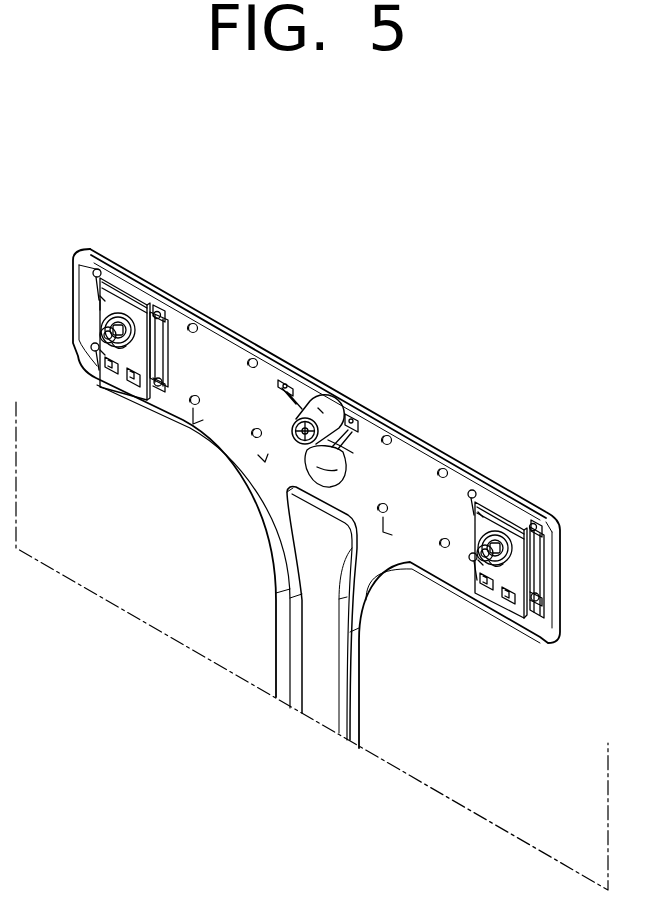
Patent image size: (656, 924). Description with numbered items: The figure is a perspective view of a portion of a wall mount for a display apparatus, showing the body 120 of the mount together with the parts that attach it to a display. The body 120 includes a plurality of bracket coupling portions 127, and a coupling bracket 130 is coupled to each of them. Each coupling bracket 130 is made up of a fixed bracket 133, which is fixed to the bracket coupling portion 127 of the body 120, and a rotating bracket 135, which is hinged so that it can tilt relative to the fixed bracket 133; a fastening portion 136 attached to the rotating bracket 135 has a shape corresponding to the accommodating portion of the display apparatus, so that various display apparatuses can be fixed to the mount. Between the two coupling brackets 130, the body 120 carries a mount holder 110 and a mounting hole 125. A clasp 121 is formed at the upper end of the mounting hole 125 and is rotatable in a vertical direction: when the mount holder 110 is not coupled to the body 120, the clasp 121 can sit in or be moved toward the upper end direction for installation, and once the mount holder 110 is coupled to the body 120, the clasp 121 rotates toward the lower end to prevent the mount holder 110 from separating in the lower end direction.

The mount holder 110 is at (322, 413).
The body 120 is at (186, 281).
The clasp 121 is at (298, 385).
The mounting hole 125 is at (316, 463).
The bracket coupling portion 127 is at (222, 370).
The coupling bracket 130 is at (122, 302).
The fixed bracket 133 is at (540, 557).
The rotating bracket 135 is at (498, 520).
The fastening portion 136 is at (505, 562).